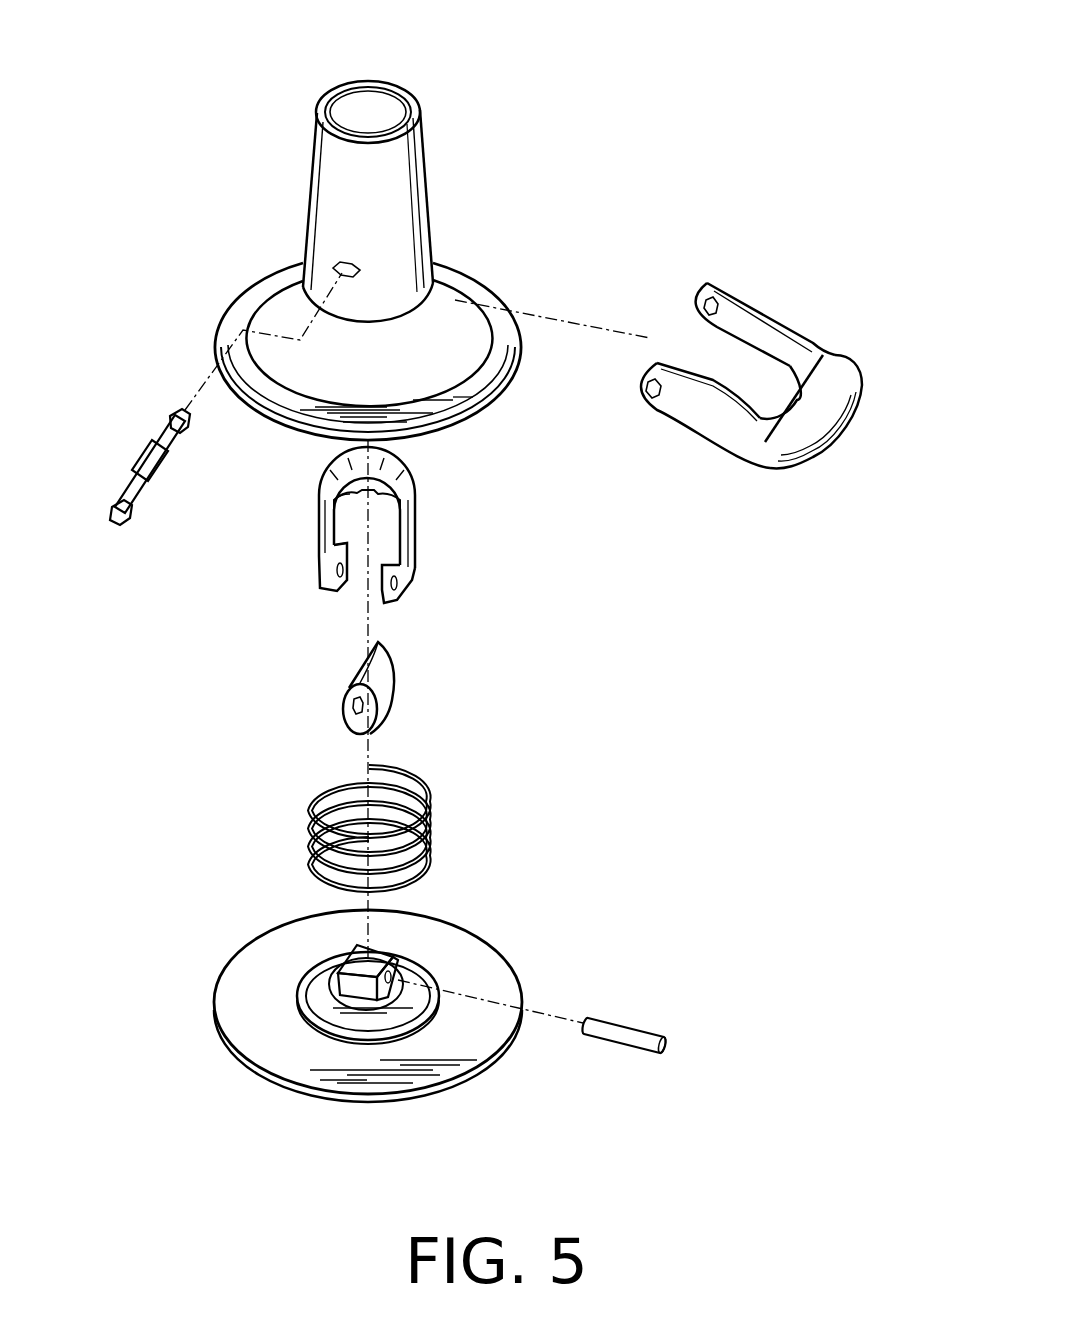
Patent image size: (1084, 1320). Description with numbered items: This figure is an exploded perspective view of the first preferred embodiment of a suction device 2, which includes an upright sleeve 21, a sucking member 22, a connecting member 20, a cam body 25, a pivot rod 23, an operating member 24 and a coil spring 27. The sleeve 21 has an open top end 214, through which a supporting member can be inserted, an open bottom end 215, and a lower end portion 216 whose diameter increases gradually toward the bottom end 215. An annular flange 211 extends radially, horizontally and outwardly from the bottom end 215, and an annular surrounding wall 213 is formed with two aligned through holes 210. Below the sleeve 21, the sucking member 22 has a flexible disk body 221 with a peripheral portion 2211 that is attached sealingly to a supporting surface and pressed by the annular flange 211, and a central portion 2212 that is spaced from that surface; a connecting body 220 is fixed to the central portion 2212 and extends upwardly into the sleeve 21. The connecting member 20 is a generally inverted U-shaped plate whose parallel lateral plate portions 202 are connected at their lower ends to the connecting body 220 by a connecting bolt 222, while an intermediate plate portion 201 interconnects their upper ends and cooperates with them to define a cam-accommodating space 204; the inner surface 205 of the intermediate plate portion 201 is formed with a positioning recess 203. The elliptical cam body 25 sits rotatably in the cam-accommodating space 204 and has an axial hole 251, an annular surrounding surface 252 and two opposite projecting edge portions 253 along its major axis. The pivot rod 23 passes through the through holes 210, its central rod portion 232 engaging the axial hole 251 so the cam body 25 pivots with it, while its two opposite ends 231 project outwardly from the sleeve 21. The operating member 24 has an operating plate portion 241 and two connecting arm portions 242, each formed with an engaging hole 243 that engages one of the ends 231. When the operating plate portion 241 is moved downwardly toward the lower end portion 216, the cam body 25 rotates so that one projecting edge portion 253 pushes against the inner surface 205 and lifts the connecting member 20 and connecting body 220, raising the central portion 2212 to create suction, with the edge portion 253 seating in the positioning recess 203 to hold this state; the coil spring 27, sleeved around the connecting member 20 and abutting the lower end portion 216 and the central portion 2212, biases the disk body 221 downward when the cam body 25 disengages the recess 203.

The suction device 2 is at (668, 210).
The connecting member 20 is at (430, 495).
The intermediate plate portion 201 is at (397, 470).
The lateral plate portions 202 is at (332, 528).
The positioning recess 203 is at (335, 488).
The cam-accommodating space 204 is at (355, 533).
The inner surface 205 is at (397, 510).
The sleeve 21 is at (459, 208).
The through holes 210 is at (340, 267).
The annular flange 211 is at (480, 272).
The annular surrounding wall 213 is at (322, 172).
The top end 214 is at (372, 108).
The bottom end 215 is at (482, 368).
The lower end portion 216 is at (455, 333).
The sucking member 22 is at (505, 935).
The connecting body 220 is at (378, 960).
The disk body 221 is at (258, 1063).
The peripheral portion 2211 is at (480, 975).
The central portion 2212 is at (429, 1045).
The connecting bolt 222 is at (640, 1045).
The pivot rod 23 is at (140, 445).
The ends 231 is at (185, 410).
The central rod portion 232 is at (153, 468).
The operating member 24 is at (830, 333).
The operating plate portion 241 is at (808, 437).
The connecting arm portions 242 is at (748, 290).
The engaging hole 243 is at (652, 397).
The cam body 25 is at (390, 635).
The axial hole 251 is at (345, 702).
The annular surrounding surface 252 is at (385, 686).
The projecting edge portions 253 is at (363, 668).
The coil spring 27 is at (420, 790).